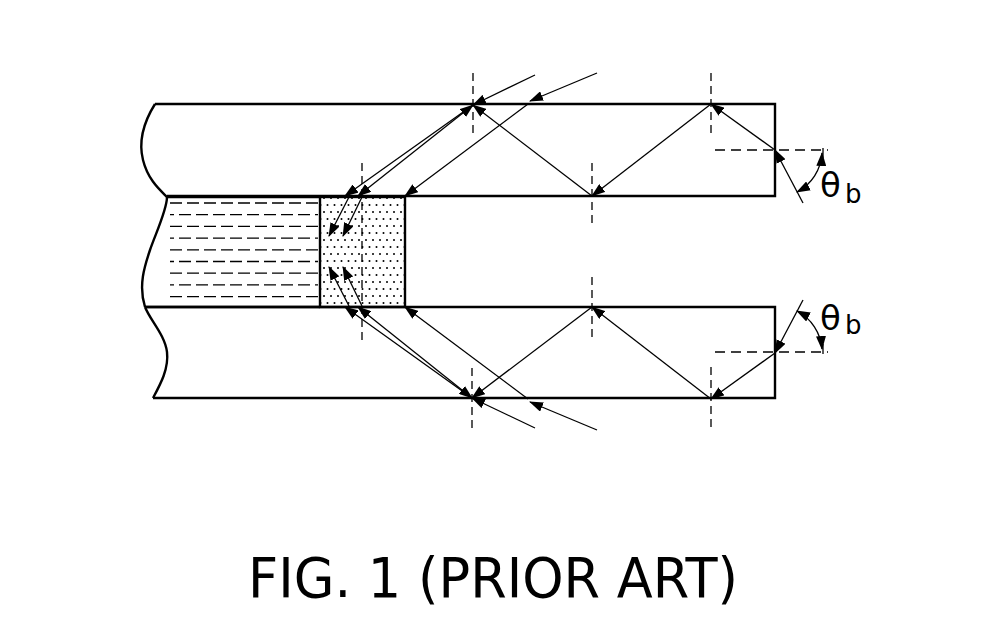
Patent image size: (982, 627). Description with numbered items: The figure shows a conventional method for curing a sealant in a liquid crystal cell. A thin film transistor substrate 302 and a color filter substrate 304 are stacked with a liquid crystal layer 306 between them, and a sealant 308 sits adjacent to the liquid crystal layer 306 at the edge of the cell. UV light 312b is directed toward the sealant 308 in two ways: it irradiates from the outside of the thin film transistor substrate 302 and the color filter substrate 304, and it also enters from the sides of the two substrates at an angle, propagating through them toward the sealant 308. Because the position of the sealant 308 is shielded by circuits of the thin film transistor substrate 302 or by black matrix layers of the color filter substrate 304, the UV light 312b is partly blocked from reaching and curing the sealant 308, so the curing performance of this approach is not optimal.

The thin film transistor substrate 302 is at (175, 356).
The color filter substrate 304 is at (152, 148).
The liquid crystal layer 306 is at (162, 252).
The sealant 308 is at (328, 197).
The UV light 312b is at (552, 87).